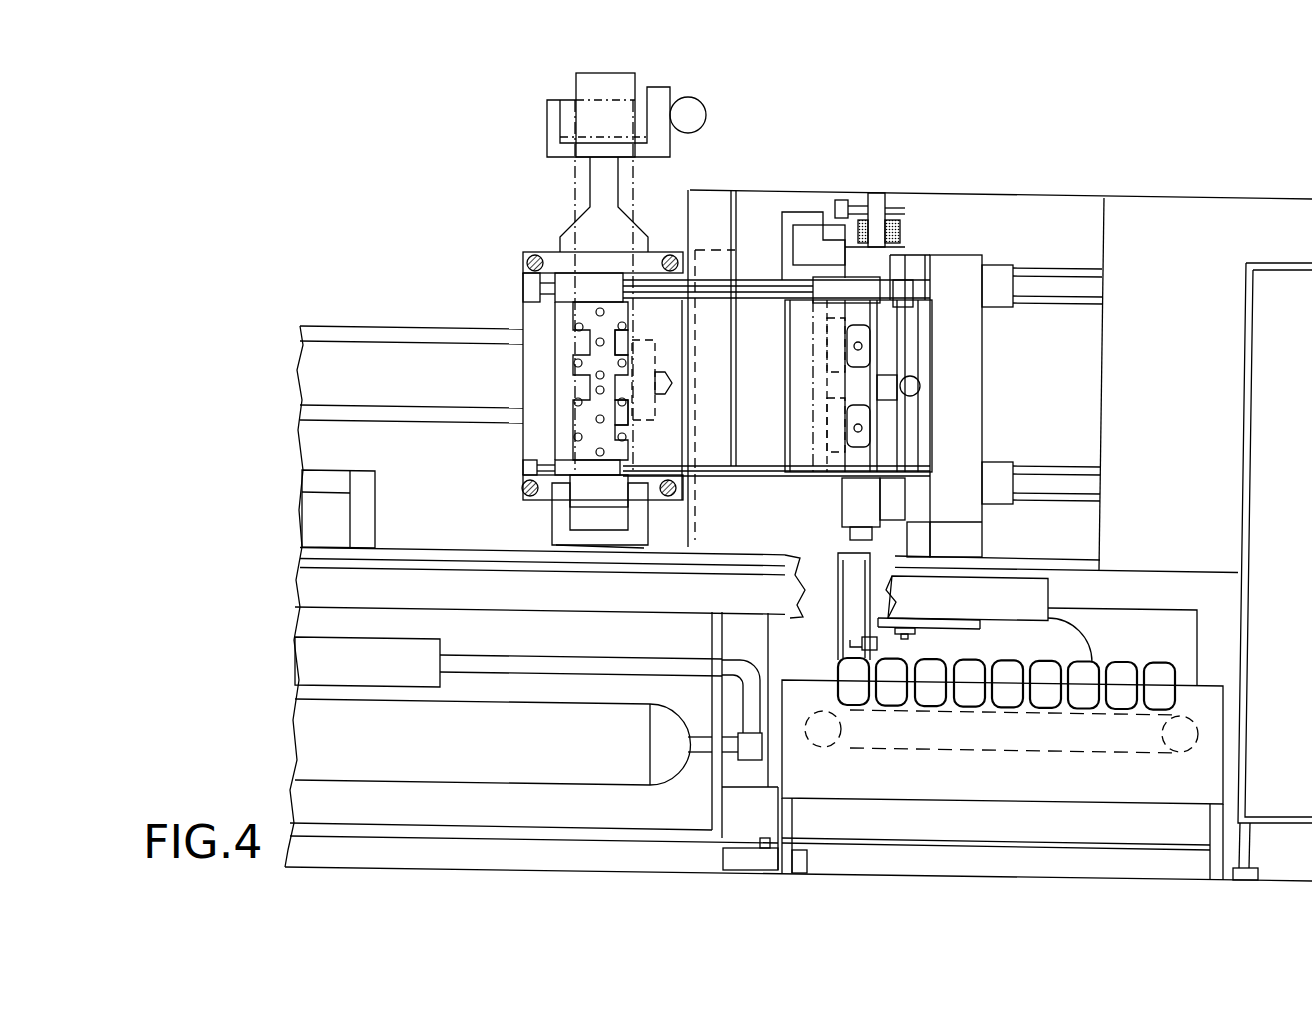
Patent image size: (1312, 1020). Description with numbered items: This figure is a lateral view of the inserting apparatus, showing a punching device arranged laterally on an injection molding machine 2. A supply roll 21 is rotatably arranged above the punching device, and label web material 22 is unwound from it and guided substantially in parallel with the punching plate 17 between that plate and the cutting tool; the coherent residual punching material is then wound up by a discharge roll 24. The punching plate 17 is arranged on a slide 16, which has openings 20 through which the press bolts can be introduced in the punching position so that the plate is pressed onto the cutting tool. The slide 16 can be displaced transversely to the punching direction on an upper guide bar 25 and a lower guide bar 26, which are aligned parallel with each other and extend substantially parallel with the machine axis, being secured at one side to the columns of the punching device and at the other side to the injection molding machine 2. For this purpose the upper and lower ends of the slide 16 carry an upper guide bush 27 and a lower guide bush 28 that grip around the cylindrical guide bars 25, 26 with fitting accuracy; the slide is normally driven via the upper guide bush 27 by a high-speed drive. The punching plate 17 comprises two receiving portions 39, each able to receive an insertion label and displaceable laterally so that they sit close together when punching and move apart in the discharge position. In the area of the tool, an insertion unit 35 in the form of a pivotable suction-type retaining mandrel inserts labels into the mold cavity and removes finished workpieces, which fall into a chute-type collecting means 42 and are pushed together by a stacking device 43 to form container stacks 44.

The injection molding machine 2 is at (1145, 232).
The slide 16 is at (575, 330).
The punching plate 17 is at (825, 340).
The openings 20 is at (560, 350).
The supply roll 21 is at (566, 71).
The label web material 22 is at (580, 178).
The discharge roll 24 is at (590, 527).
The upper guide bar 25 is at (765, 285).
The lower guide bar 26 is at (790, 478).
The upper guide bush 27 is at (590, 285).
The lower guide bush 28 is at (585, 465).
The insertion unit 35 is at (900, 194).
The receiving portions 39 is at (630, 333).
The chute-type collecting means 42 is at (858, 630).
The conveyor 43 is at (930, 760).
The container stacks 44 is at (1053, 668).